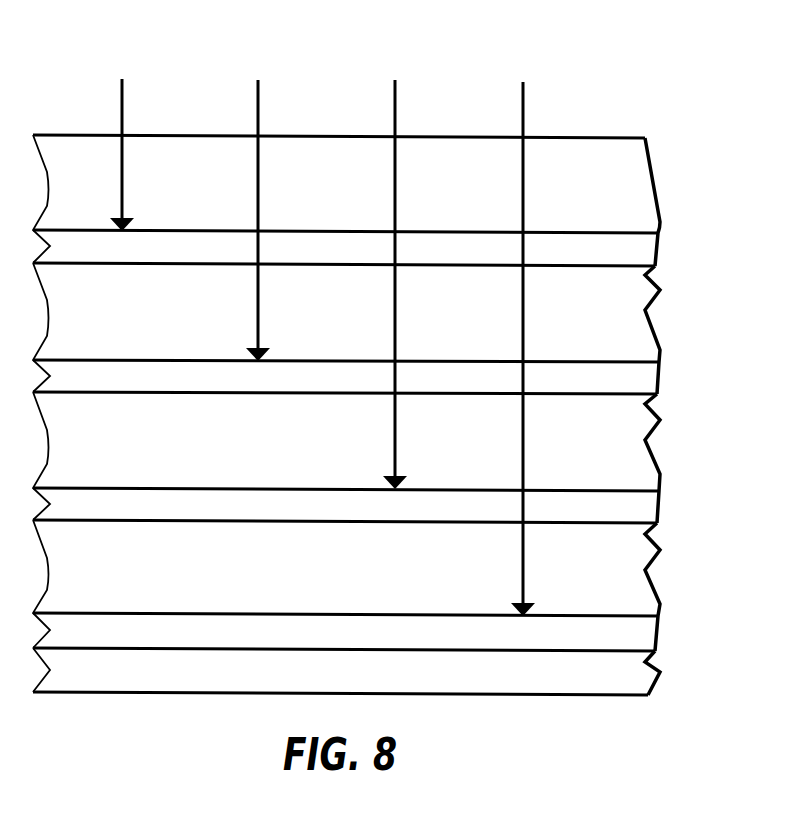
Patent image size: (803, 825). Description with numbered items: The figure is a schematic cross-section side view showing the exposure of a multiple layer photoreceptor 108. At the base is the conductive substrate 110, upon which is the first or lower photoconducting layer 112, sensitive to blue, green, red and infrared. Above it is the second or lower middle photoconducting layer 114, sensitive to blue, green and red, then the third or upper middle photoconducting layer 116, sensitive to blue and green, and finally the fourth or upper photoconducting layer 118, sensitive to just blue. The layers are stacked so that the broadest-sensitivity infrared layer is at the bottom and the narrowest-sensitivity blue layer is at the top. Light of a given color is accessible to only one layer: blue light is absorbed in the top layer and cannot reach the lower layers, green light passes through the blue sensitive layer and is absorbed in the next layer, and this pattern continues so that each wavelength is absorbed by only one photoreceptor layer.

The photoreceptor 108 is at (577, 58).
The conductive substrate 110 is at (660, 672).
The first or lower photoconducting layer 112 is at (664, 651).
The second or lower middle photoconducting layer 114 is at (664, 522).
The third or upper middle photoconducting layer 116 is at (664, 393).
The fourth or upper photoconducting layer 118 is at (664, 264).